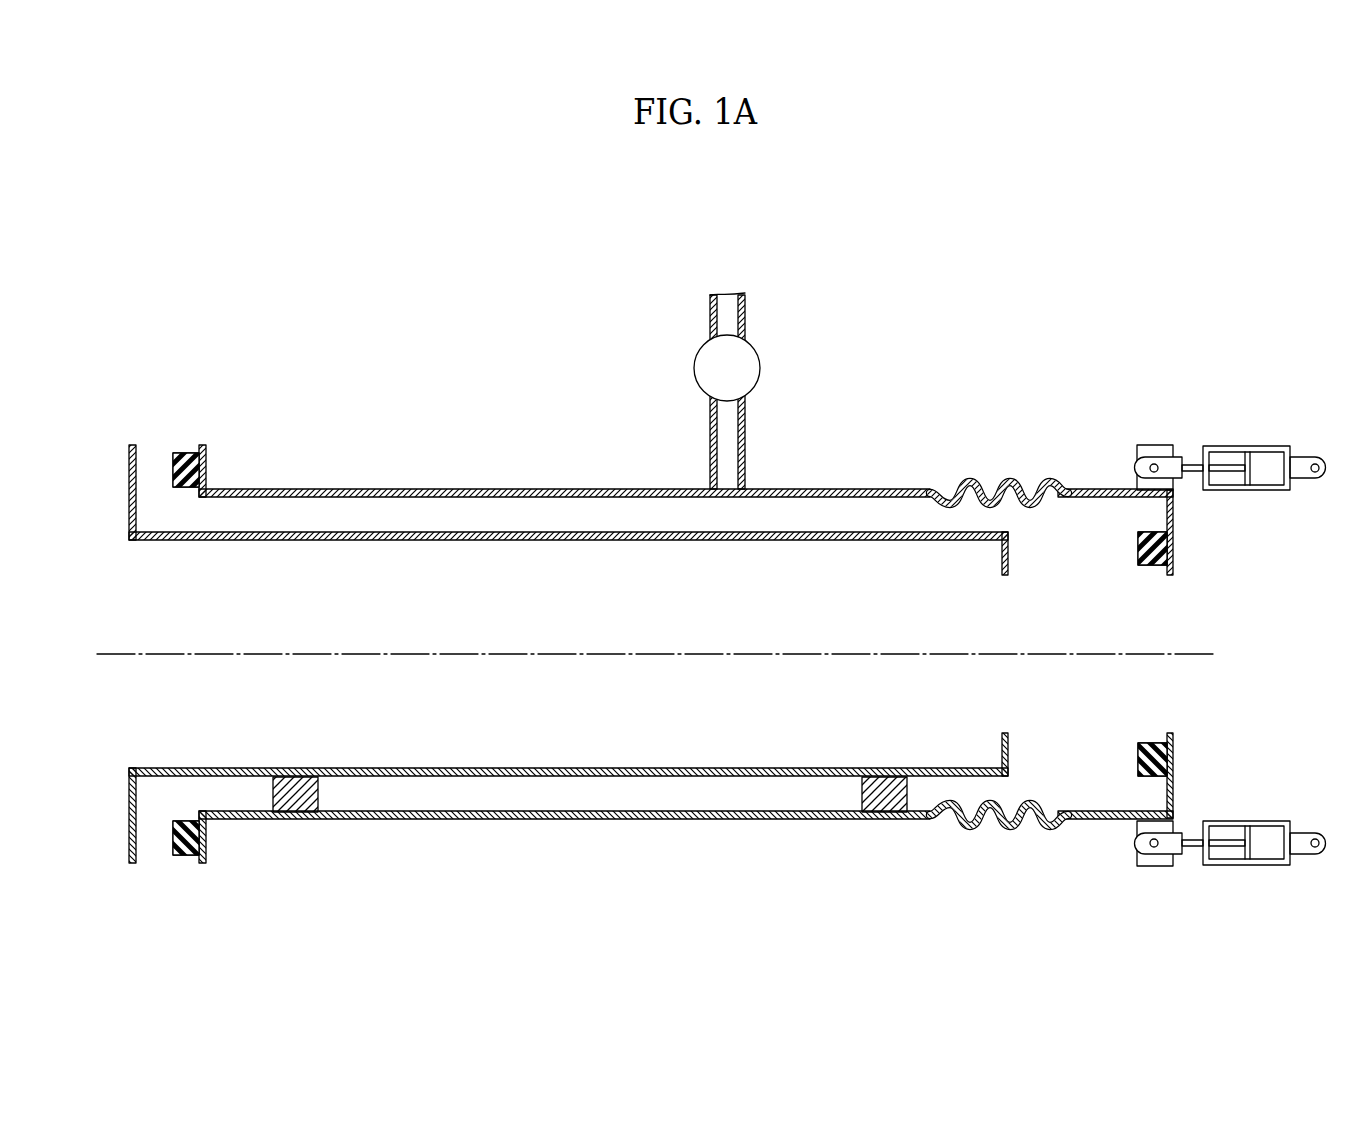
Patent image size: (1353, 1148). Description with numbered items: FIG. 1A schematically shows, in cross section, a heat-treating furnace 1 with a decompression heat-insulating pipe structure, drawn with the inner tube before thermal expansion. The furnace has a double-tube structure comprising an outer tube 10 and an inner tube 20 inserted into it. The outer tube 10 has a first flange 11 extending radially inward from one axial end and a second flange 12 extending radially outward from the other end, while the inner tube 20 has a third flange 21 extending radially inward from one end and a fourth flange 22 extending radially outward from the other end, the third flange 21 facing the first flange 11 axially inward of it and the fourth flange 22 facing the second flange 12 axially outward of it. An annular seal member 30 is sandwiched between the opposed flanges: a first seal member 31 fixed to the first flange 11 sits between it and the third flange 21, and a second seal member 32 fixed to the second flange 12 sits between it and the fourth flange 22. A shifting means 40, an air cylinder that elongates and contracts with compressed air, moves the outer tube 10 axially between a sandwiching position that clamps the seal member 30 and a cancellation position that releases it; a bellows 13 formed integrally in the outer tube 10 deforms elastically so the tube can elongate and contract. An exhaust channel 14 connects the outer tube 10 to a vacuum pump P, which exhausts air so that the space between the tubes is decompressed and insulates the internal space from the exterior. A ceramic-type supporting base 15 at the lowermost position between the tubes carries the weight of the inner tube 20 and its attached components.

The heat-treating furnace 1 is at (1026, 277).
The outer tube 10 is at (437, 488).
The first flange 11 is at (1173, 548).
The second flange 12 is at (206, 465).
The bellows 13 is at (985, 477).
The exhaust channel 14 is at (740, 432).
The supporting base 15 is at (295, 813).
The inner tube 20 is at (494, 531).
The third flange 21 is at (1002, 560).
The fourth flange 22 is at (129, 466).
The seal member 30 is at (172, 452).
The first seal member 31 is at (1150, 565).
The second seal member 32 is at (185, 452).
The shifting means 40 is at (1232, 446).
The vacuum pump P is at (752, 368).